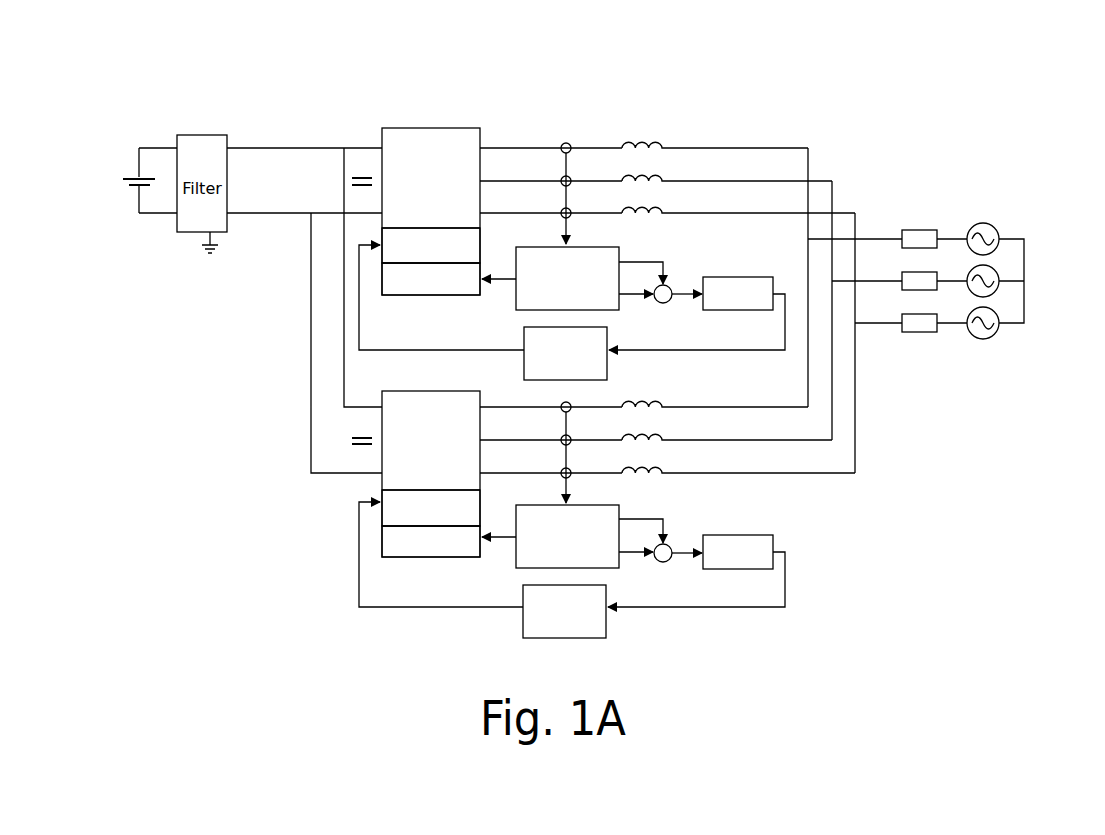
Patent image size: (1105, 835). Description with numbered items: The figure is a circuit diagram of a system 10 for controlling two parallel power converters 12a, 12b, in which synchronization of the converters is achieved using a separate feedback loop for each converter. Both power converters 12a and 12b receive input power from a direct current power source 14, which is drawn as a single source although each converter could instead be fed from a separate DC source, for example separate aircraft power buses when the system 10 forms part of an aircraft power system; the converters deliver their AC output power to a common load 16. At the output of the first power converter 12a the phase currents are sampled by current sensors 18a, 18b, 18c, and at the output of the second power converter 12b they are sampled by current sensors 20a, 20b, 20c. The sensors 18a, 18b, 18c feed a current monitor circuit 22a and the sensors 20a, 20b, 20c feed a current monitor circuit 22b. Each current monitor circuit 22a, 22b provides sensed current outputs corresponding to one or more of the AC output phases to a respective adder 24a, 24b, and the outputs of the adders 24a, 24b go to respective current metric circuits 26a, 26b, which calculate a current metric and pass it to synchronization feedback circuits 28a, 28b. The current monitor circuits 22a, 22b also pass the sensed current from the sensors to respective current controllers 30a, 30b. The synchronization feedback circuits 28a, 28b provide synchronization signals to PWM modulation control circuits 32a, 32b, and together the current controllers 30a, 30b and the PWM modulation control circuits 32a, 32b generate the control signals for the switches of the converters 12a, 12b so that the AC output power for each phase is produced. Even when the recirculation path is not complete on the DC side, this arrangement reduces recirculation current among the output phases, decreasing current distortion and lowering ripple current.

The system 10 is at (876, 86).
The DC power source 14 is at (121, 172).
The load 16 is at (1036, 206).
The power converter 12a is at (461, 228).
The power converter 12b is at (459, 490).
The current sensor 18a is at (568, 142).
The current sensor 18b is at (571, 177).
The current sensor 18c is at (571, 209).
The current sensor 20a is at (571, 403).
The current sensor 20b is at (571, 436).
The current sensor 20c is at (571, 469).
The current monitor circuit 22a is at (567, 278).
The current monitor circuit 22b is at (567, 536).
The adder 24a is at (663, 304).
The adder 24b is at (663, 563).
The current metric circuit 26a is at (730, 276).
The current metric circuit 26b is at (730, 534).
The synchronization feedback circuit 28a is at (608, 371).
The synchronization feedback circuit 28b is at (583, 639).
The current controller 30a is at (424, 296).
The current controller 30b is at (424, 558).
The PWM modulation control circuit 32a is at (481, 246).
The PWM modulation control circuit 32b is at (481, 504).